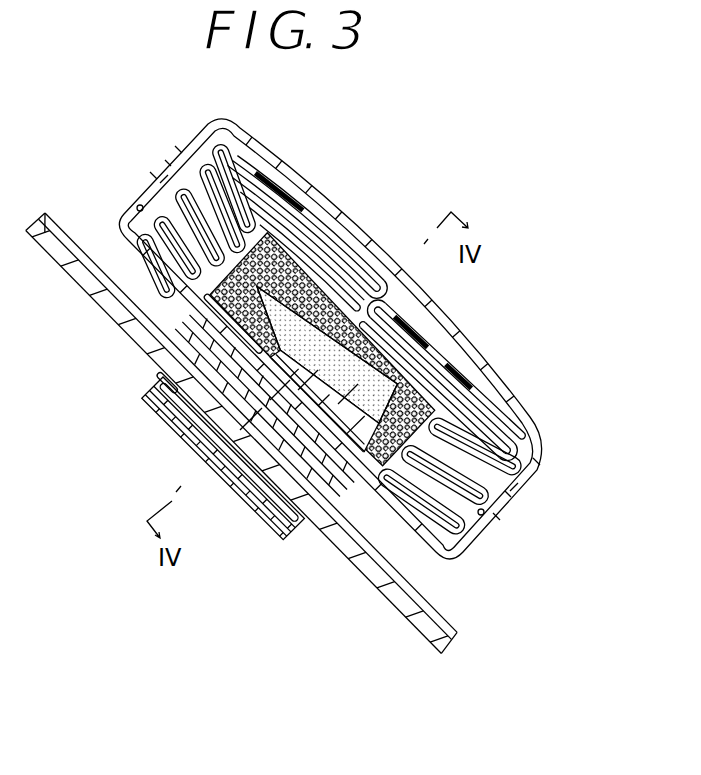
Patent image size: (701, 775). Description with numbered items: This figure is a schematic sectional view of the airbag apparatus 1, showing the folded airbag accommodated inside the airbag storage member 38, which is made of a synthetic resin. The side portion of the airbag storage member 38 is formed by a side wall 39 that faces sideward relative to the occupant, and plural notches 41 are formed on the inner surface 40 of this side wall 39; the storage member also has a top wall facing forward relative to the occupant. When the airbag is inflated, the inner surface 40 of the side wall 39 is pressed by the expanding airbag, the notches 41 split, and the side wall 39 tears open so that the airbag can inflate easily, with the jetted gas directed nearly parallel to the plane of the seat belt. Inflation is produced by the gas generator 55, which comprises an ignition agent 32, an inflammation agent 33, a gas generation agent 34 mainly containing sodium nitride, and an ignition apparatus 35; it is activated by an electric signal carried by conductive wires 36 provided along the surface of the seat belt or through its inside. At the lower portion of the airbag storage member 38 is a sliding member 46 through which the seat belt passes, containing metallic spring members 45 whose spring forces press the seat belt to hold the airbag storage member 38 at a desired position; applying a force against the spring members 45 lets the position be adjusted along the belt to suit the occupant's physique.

The airbag apparatus 1 is at (318, 137).
The ignition agent 32 is at (282, 392).
The inflammation agent 33 is at (308, 382).
The gas generation agent 34 is at (348, 396).
The ignition apparatus 35 is at (255, 425).
The conductive wires 36 is at (412, 628).
The airbag storage member 38 is at (495, 378).
The side wall 39 is at (160, 183).
The inner surface 40 is at (133, 210).
The notches 41 is at (167, 163).
The spring members 45 is at (160, 379).
The sliding member 46 is at (175, 425).
The gas generator 55 is at (372, 612).